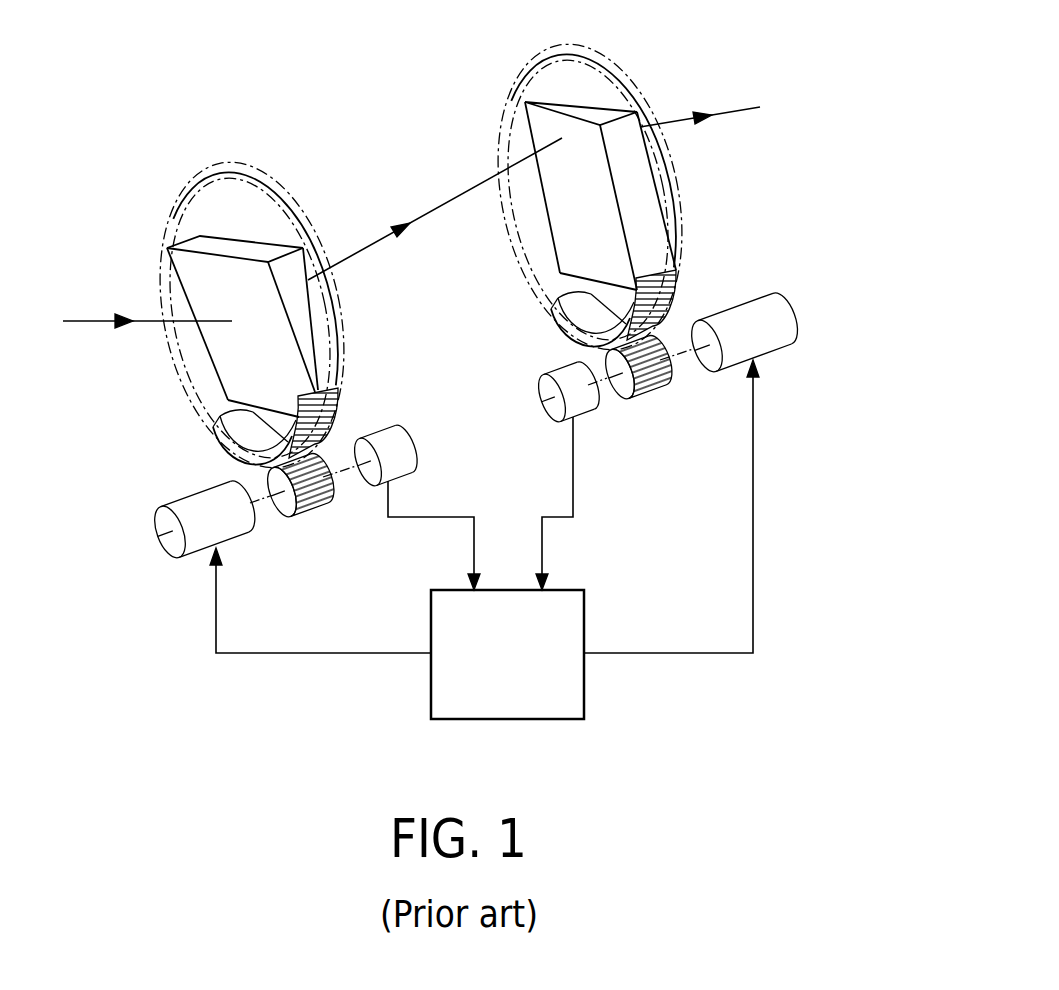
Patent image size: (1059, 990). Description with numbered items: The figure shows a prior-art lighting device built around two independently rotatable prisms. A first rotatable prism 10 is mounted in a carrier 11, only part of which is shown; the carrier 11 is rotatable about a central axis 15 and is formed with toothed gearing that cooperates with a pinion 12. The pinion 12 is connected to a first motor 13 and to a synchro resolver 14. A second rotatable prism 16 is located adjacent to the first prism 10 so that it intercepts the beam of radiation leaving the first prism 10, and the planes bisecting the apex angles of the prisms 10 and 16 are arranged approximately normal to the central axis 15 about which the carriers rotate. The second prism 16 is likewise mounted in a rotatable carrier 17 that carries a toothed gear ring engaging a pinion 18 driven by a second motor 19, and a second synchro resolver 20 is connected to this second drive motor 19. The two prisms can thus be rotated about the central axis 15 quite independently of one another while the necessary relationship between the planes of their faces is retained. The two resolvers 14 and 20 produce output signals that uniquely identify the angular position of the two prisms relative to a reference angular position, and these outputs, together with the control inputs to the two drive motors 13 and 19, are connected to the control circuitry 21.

The first rotatable prism 10 is at (222, 364).
The carrier 11 is at (341, 393).
The pinion 12 is at (305, 512).
The first motor 13 is at (164, 532).
The synchro resolver 14 is at (408, 453).
The central axis 15 is at (83, 320).
The second rotatable prism 16 is at (568, 245).
The carrier 17 is at (680, 272).
The pinion 18 is at (646, 393).
The second motor 19 is at (800, 318).
The second synchro resolver 20 is at (549, 398).
The control circuitry 21 is at (507, 654).